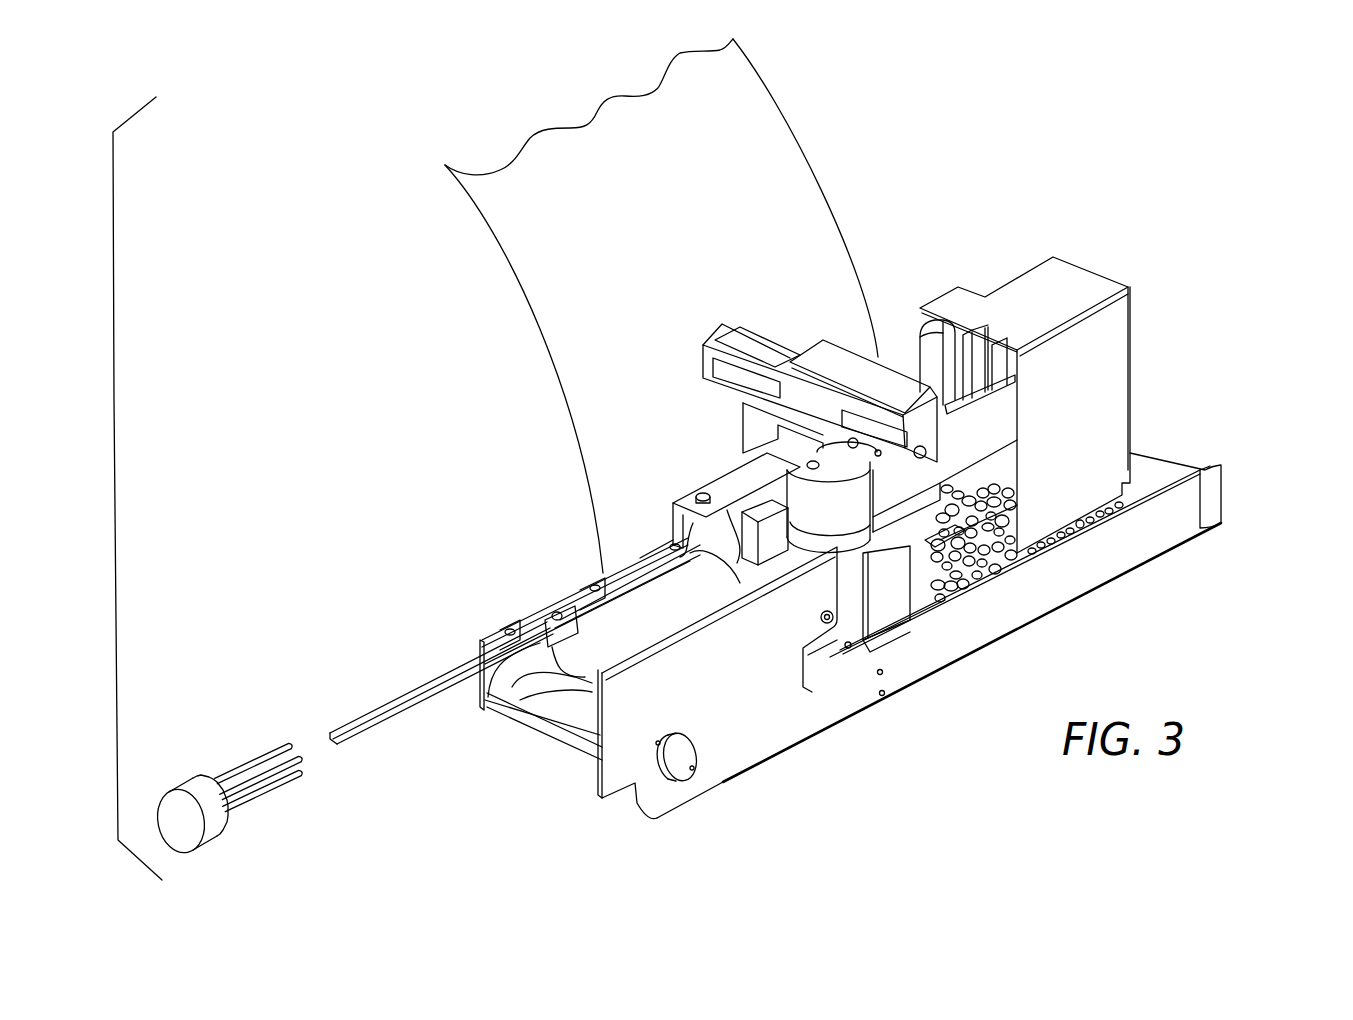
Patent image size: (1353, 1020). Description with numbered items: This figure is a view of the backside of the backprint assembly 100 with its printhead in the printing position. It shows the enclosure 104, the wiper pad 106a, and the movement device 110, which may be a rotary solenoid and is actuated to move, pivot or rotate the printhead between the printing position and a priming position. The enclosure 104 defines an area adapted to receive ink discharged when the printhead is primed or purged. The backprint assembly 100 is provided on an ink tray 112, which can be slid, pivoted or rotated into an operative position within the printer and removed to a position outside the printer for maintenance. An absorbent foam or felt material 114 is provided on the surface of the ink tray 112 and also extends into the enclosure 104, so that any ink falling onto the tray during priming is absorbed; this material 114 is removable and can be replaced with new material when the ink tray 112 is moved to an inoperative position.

The backprint assembly 100 is at (770, 138).
The enclosure 104 is at (1110, 380).
The wiper pad 106a is at (930, 352).
The movement device 110 is at (806, 500).
The ink tray 112 is at (1178, 505).
The absorbent foam or felt material 114 is at (995, 565).